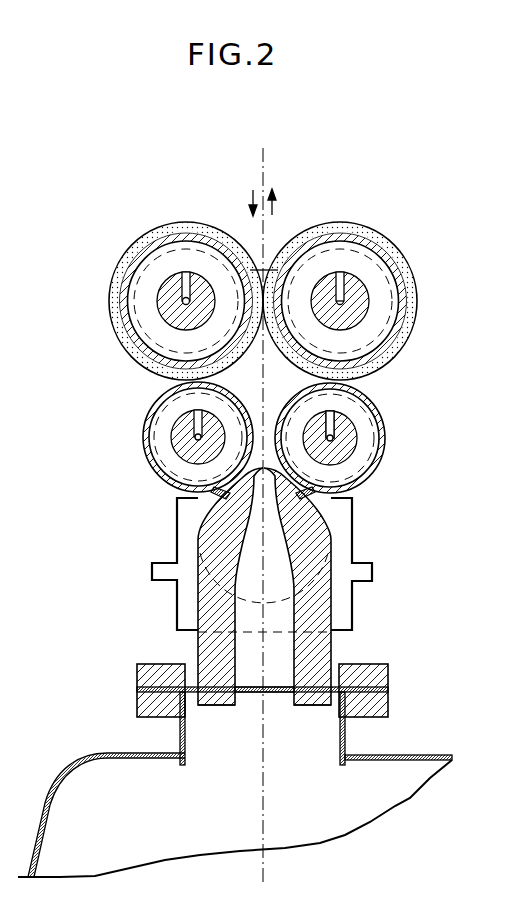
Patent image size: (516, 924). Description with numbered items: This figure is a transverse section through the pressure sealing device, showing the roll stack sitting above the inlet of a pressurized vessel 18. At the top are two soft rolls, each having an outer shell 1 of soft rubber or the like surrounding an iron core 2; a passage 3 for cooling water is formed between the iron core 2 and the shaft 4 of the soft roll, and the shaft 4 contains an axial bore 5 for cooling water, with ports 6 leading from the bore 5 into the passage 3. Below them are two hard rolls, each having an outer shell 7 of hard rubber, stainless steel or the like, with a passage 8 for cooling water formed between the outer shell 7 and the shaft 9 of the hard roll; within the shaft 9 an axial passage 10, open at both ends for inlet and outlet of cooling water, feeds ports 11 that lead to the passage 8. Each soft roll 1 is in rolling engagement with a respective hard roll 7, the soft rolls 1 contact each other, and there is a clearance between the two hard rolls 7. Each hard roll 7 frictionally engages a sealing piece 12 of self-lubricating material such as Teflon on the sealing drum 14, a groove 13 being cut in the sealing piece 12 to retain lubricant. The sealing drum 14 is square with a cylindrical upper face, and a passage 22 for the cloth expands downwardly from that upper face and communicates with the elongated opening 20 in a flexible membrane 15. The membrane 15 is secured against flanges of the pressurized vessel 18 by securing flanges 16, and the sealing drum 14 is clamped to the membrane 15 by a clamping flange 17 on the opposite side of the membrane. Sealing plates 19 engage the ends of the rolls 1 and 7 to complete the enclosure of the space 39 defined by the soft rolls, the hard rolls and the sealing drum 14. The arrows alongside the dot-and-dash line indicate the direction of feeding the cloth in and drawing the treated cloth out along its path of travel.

The outer shell of soft roll 1 is at (362, 256).
The iron core 2 is at (370, 302).
The passage for cooling water 3 is at (398, 280).
The shaft of soft roll 4 is at (412, 283).
The axial bore 5 is at (363, 321).
The ports 6 is at (338, 272).
The outer shell of hard roll 7 is at (366, 421).
The passage for cooling water 8 is at (370, 428).
The shaft of hard roll 9 is at (334, 440).
The axial passage 10 is at (356, 447).
The ports 11 is at (326, 409).
The sealing piece 12 is at (317, 502).
The groove 13 is at (340, 495).
The sealing drum 14 is at (340, 580).
The flexible membrane 15 is at (339, 700).
The securing flanges 16 is at (386, 664).
The clamping flange 17 is at (320, 706).
The pressurized vessel 18 is at (388, 756).
The sealing plates 19 is at (177, 530).
The elongated opening 20 is at (270, 690).
The passage 22 is at (324, 522).
The space 39 is at (247, 378).